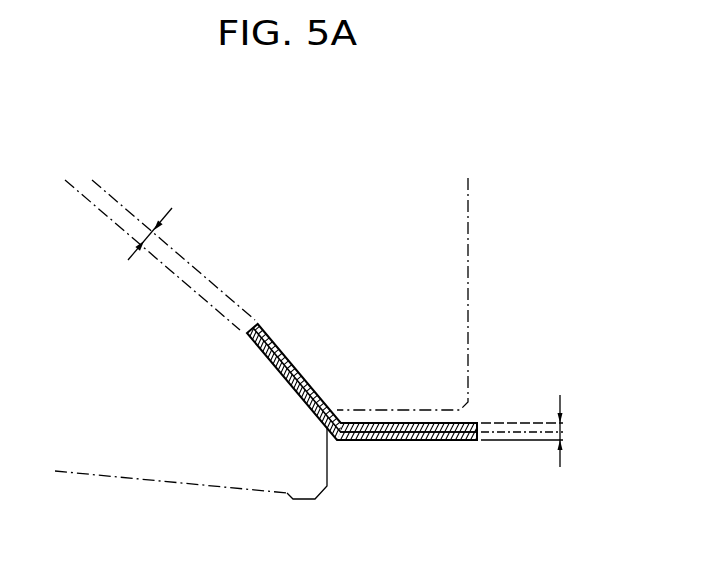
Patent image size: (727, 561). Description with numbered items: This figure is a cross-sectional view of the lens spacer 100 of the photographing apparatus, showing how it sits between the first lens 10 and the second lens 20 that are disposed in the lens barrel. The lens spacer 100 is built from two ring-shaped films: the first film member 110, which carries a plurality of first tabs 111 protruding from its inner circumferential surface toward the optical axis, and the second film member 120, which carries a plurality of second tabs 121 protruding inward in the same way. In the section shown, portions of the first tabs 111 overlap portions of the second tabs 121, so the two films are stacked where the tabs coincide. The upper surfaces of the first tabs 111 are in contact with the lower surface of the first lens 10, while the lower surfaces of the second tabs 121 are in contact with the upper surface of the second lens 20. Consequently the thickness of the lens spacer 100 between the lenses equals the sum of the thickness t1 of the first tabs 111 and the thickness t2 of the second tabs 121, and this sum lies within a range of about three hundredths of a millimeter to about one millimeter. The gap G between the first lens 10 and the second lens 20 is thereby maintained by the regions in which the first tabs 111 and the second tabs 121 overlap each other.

The first lens 10 is at (447, 297).
The second lens 20 is at (298, 471).
The lens spacer 100 is at (412, 403).
The first film member 110 is at (410, 446).
The first tabs 111 is at (279, 344).
The second film member 120 is at (460, 446).
The second tabs 121 is at (298, 368).
The gap G is at (147, 237).
The thickness of the first tabs t1 is at (563, 428).
The thickness of the second tabs t2 is at (563, 437).